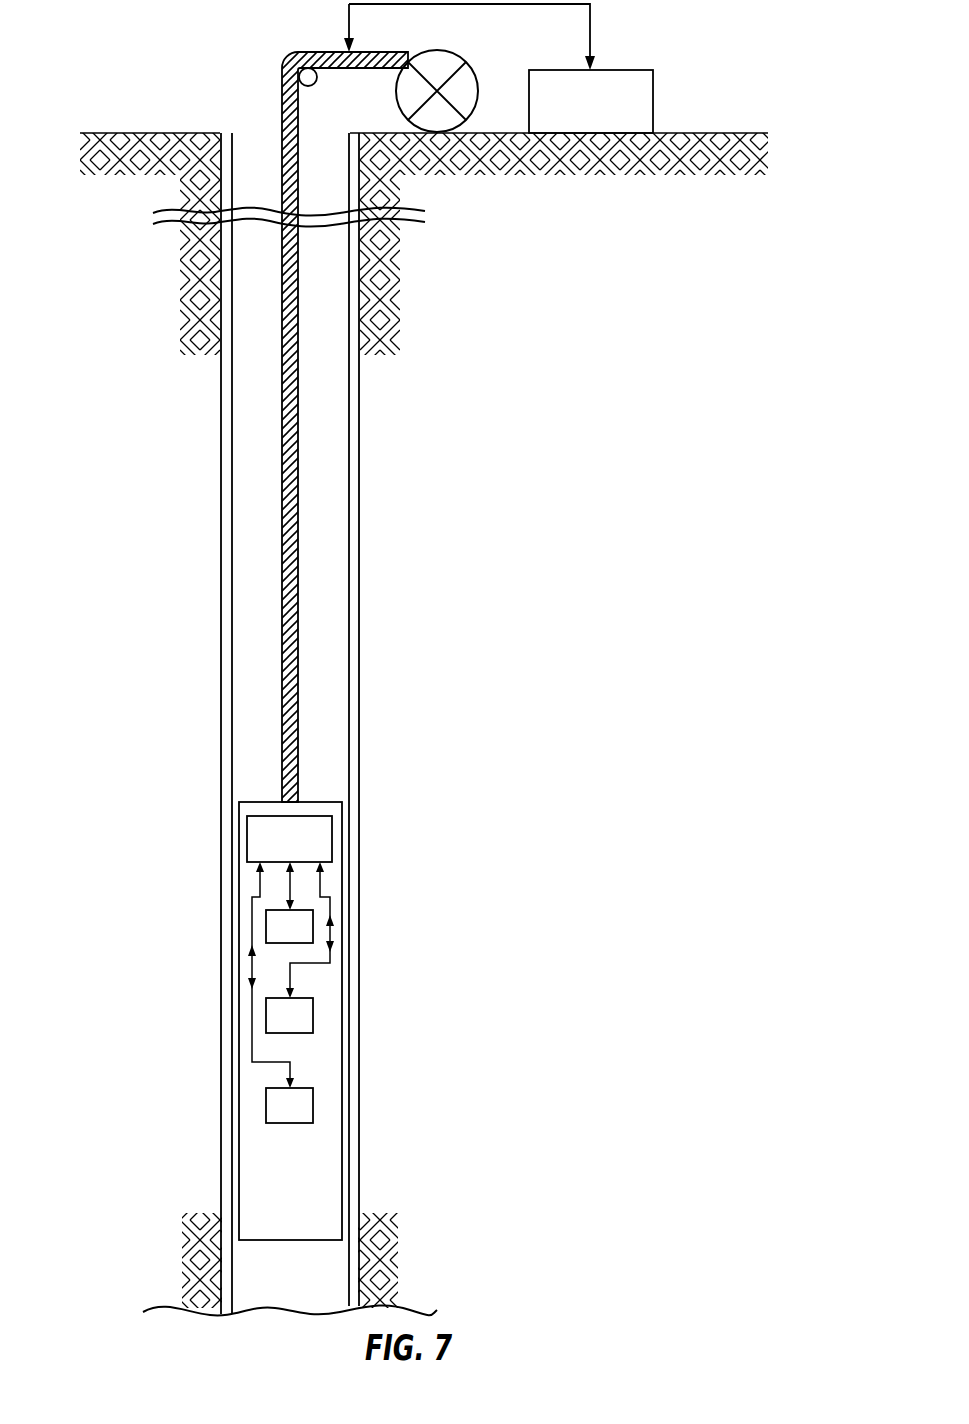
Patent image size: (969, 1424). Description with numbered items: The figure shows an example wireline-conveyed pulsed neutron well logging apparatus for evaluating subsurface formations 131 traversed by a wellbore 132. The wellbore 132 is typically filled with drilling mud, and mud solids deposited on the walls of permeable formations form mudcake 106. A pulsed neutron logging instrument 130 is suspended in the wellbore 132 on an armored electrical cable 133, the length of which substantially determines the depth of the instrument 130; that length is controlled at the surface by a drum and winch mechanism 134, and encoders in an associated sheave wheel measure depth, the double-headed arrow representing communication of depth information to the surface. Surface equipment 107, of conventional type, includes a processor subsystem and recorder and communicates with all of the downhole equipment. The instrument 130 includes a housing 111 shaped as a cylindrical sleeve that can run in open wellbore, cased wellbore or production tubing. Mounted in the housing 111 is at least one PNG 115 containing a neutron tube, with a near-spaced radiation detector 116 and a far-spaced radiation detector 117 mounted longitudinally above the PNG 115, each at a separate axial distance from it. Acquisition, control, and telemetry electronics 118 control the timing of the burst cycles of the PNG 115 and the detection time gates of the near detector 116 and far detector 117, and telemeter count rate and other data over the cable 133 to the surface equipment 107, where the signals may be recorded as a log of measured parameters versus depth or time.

The mudcake 106 is at (221, 607).
The surface equipment 107 is at (613, 100).
The housing 111 is at (237, 1117).
The PNG 115 is at (295, 1108).
The near-spaced radiation detector 116 is at (297, 1016).
The far-spaced radiation detector 117 is at (285, 928).
The acquisition, control, and telemetry electronics 118 is at (295, 843).
The pulsed neutron logging instrument 130 is at (264, 784).
The subsurface formations 131 is at (118, 133).
The wellbore 132 is at (257, 126).
The armored electrical cable 133 is at (289, 65).
The drum and winch mechanism 134 is at (453, 53).